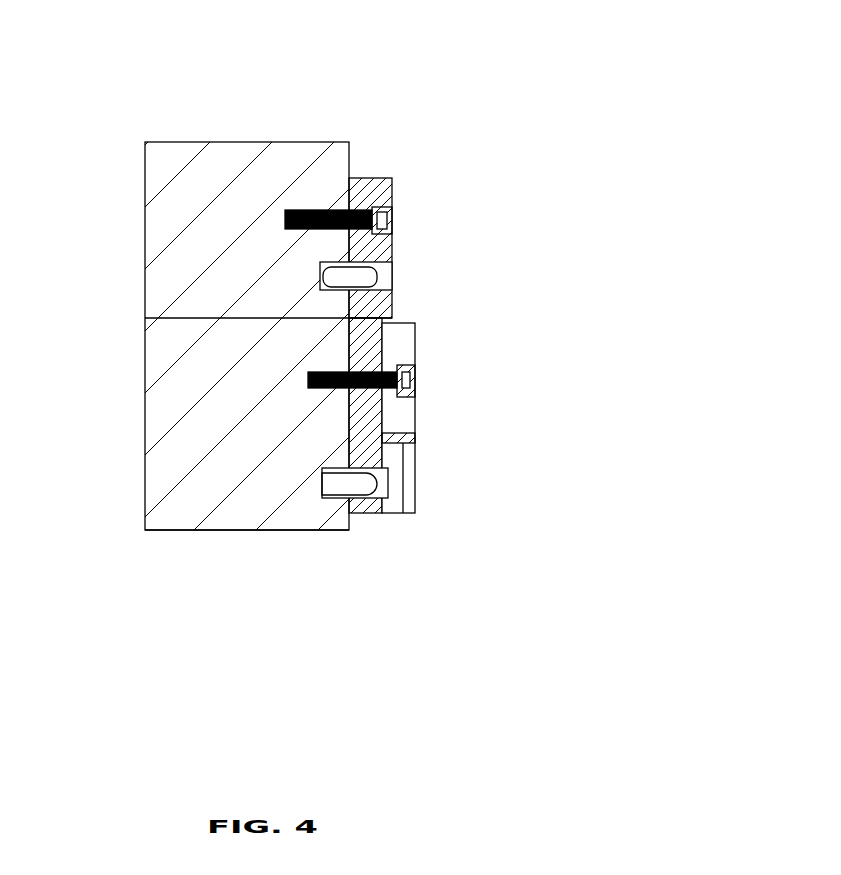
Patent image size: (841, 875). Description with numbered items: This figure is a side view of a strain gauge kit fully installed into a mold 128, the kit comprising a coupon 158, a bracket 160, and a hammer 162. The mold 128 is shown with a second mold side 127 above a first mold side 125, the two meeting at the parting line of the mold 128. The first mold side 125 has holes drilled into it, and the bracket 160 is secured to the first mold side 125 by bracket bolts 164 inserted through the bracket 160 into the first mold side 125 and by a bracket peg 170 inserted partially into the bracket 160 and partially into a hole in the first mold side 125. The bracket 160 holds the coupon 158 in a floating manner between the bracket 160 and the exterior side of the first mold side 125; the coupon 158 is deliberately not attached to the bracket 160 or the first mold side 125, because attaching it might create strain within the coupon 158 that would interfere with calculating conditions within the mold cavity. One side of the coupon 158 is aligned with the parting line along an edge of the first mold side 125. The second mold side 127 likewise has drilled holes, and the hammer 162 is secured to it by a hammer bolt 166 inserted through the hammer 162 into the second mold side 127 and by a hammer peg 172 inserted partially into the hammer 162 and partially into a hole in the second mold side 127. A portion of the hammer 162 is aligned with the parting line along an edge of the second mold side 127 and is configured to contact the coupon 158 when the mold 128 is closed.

The mold 128 is at (110, 130).
The second mold side 127 is at (200, 205).
The first mold side 125 is at (200, 432).
The hammer 162 is at (377, 190).
The hammer bolt 166 is at (315, 222).
The hammer peg 172 is at (340, 279).
The coupon 158 is at (362, 352).
The bracket 160 is at (403, 354).
The bracket bolts 164 is at (325, 388).
The bracket peg 170 is at (338, 483).